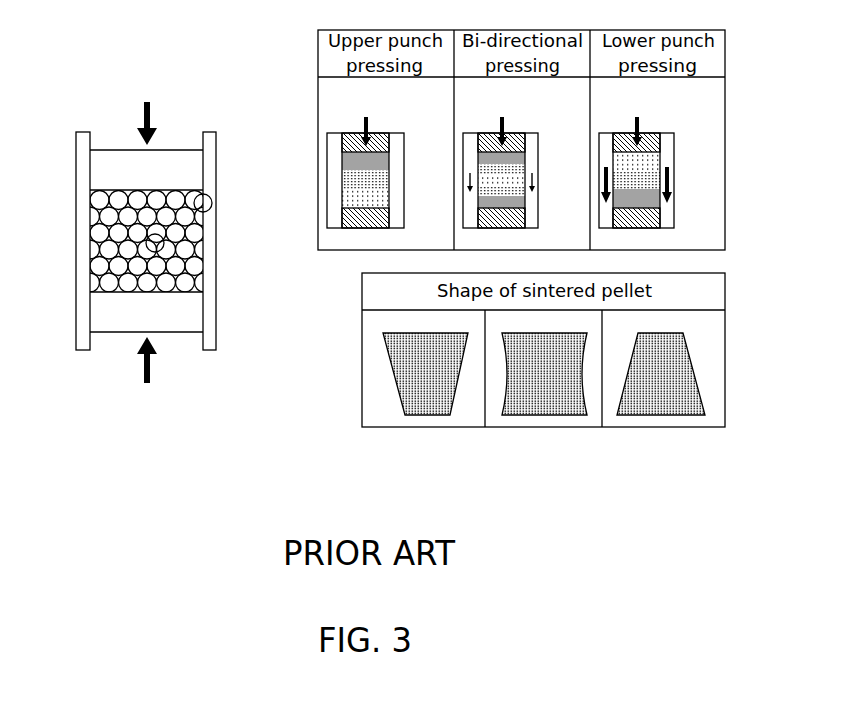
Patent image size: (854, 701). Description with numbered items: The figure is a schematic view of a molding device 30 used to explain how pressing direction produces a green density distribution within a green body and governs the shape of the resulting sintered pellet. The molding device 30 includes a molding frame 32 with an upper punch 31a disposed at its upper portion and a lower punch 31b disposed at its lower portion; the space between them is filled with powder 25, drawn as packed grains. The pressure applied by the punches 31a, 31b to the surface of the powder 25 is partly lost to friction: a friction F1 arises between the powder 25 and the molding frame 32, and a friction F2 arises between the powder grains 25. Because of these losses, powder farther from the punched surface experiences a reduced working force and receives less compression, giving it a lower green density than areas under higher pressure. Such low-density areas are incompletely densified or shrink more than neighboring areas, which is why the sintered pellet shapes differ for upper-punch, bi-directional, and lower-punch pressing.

The molding device 30 is at (204, 91).
The upper punch 31a is at (110, 148).
The lower punch 31b is at (107, 327).
The molding frame 32 is at (218, 313).
The powder 25 is at (198, 267).
The friction between powder and molding frame F1 is at (212, 203).
The friction between powder grains F2 is at (164, 243).